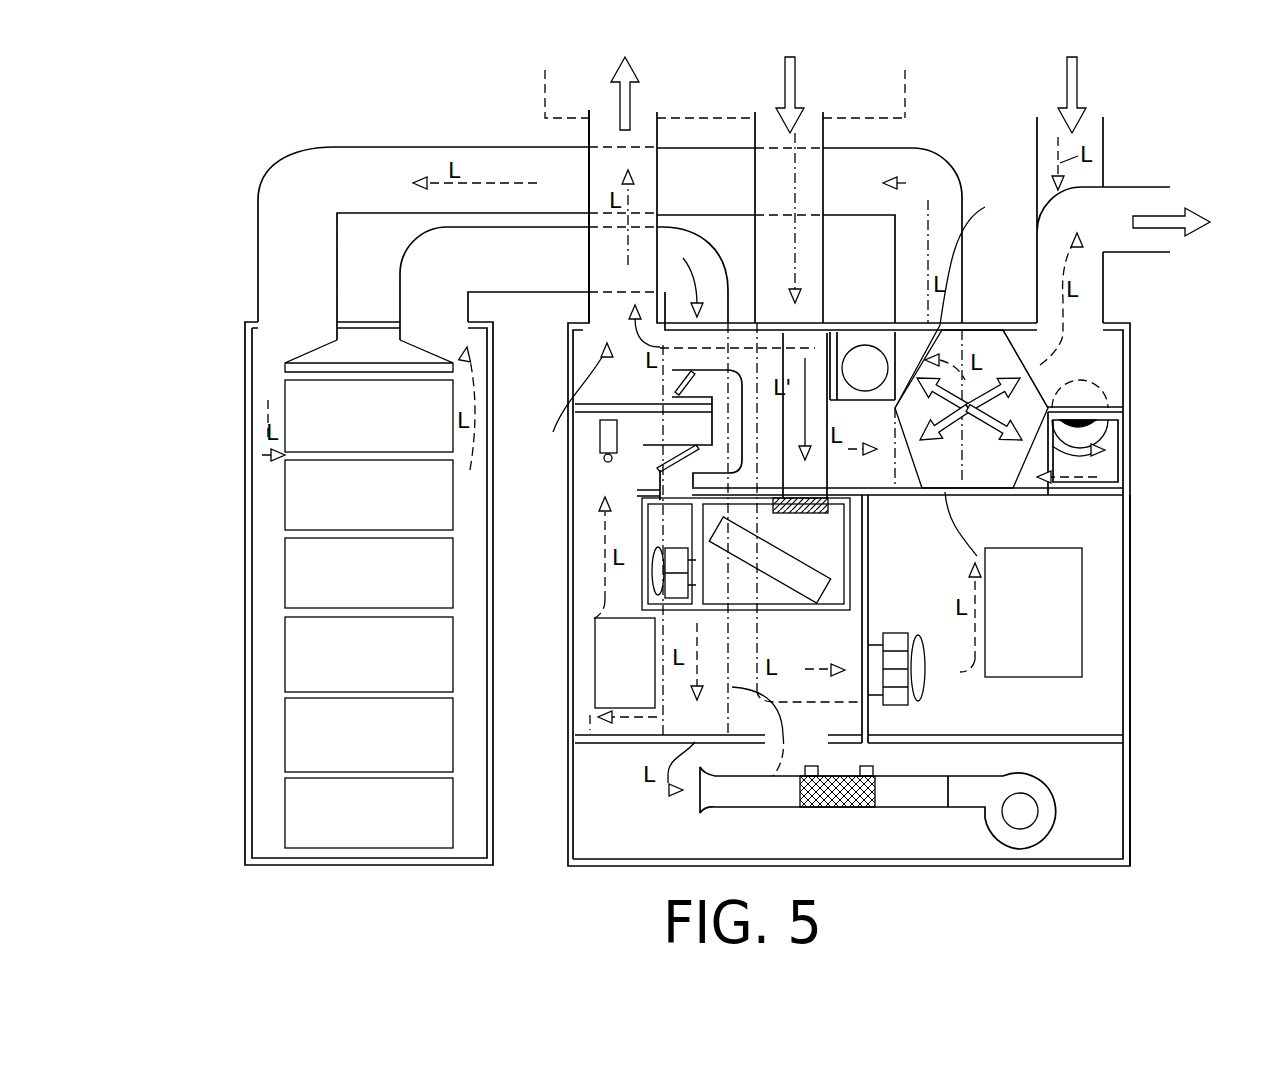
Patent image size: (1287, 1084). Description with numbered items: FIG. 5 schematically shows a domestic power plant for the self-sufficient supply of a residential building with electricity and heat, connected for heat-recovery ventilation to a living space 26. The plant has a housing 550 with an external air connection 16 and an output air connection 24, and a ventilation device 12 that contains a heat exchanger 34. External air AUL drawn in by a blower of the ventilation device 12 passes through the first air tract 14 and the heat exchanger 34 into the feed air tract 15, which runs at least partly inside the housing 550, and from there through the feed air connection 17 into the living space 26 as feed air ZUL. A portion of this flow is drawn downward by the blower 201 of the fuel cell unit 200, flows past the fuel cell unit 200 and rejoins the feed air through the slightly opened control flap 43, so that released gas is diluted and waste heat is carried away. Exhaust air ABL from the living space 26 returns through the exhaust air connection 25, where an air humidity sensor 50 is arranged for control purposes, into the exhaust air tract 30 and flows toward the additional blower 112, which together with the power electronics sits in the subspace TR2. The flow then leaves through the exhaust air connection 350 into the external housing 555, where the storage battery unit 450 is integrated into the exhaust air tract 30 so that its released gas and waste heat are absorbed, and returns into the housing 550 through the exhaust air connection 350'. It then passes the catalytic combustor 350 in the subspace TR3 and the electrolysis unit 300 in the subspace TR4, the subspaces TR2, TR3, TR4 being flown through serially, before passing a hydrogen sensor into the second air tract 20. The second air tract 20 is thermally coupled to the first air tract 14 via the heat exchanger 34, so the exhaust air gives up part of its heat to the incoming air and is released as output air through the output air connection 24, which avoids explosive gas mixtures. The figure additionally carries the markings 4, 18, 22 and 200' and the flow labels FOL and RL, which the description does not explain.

The ventilation system 4 is at (1184, 117).
The ventilation device 12 is at (1183, 338).
The first air tract 14 is at (1043, 470).
The feed air tract 15 is at (574, 402).
The external air connection 16 is at (1030, 300).
The feed air connection 17 is at (574, 314).
The exhaust air path 18 is at (951, 295).
The second air tract 20 is at (927, 450).
The cross-flow heat exchanger core 22 is at (907, 462).
The output air connection 24 is at (1092, 302).
The exhaust air connection 25 is at (833, 317).
The living space 26 is at (550, 82).
The exhaust air tract 30 is at (777, 268).
The heat exchanger 34 is at (1002, 337).
The control flap 43 is at (674, 385).
The air humidity sensor 50 is at (598, 452).
The additional blower 112 is at (890, 706).
The fuel cell unit 200 is at (746, 554).
The electrolyzer 200' is at (769, 550).
The blower 201 is at (676, 548).
The electrolysis unit 300 is at (603, 667).
The catalytic combustor 350 is at (878, 580).
The exhaust air connection 350' is at (707, 273).
The storage battery unit 450 is at (272, 648).
The housing 550 is at (1132, 765).
The external housing 555 is at (248, 530).
The feed air ZUL is at (640, 70).
The exhaust air ABL is at (788, 83).
The external air AUL is at (1073, 96).
The discharge air FOL is at (1193, 212).
The return air RL is at (898, 110).
The subspace TR2 is at (1098, 688).
The subspace TR3 is at (1110, 820).
The subspace TR4 is at (585, 698).